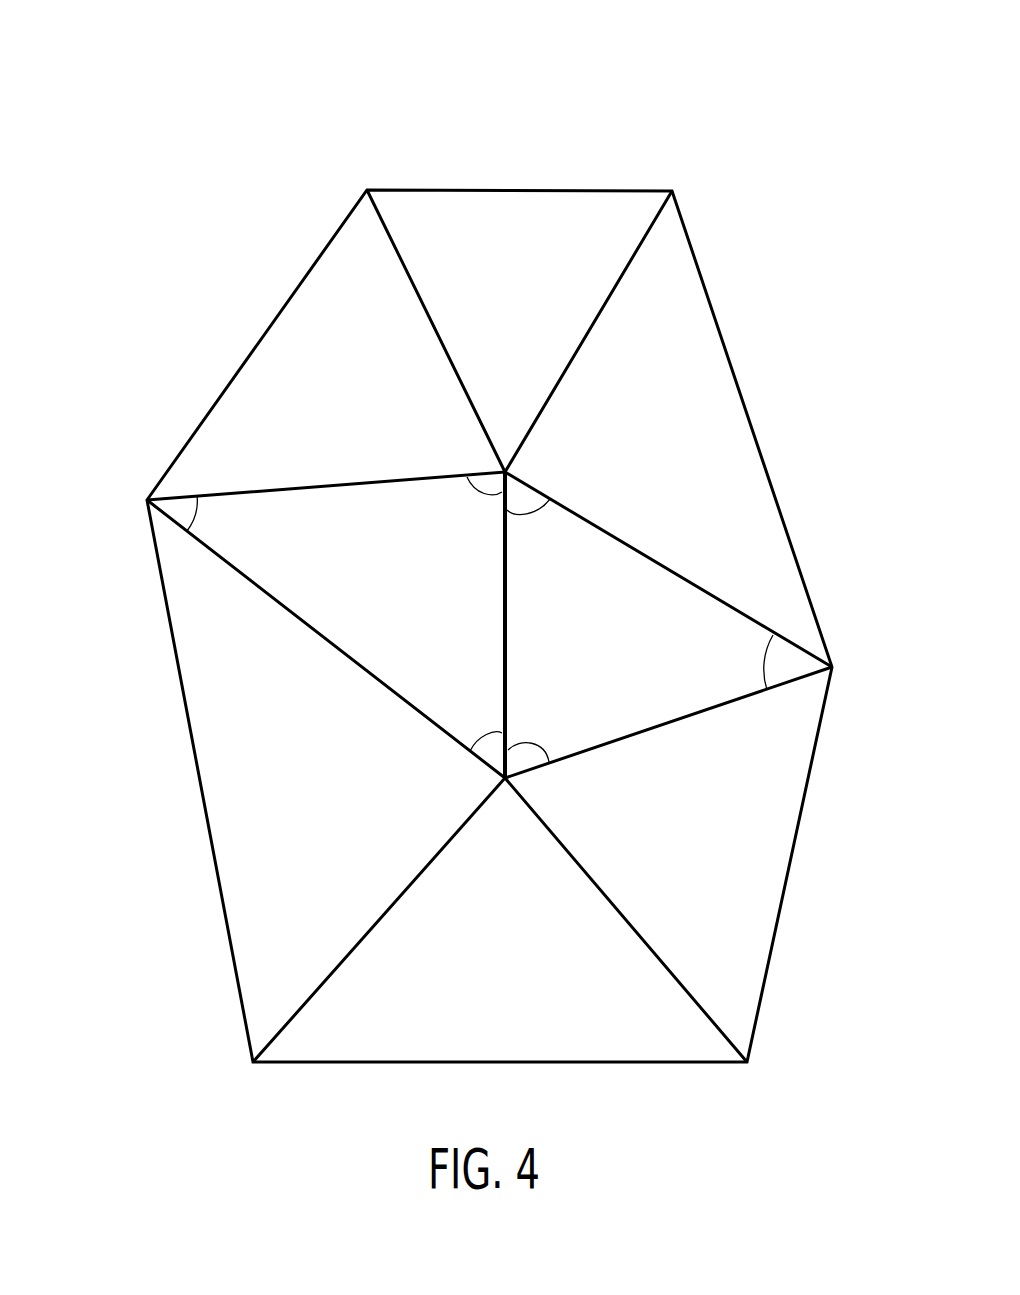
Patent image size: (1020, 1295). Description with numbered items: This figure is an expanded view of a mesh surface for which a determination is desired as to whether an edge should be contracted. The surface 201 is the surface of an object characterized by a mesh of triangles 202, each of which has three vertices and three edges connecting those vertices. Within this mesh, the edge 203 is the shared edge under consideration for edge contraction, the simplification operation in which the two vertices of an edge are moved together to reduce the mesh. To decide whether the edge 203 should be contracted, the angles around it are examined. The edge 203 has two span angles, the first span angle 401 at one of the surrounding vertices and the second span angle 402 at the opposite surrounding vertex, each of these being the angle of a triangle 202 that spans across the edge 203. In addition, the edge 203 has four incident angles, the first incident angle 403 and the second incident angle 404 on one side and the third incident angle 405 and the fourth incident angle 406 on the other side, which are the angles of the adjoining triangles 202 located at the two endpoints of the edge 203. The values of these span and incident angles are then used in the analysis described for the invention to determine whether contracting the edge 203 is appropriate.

The surface 201 is at (781, 128).
The triangles 202 is at (243, 395).
The edge 203 is at (508, 627).
The span angle S1' 401 is at (177, 512).
The span angle S2' 402 is at (788, 660).
The incident angle I1' 403 is at (485, 483).
The incident angle I2' 404 is at (487, 762).
The incident angle I3' 405 is at (530, 498).
The incident angle I4' 406 is at (523, 760).